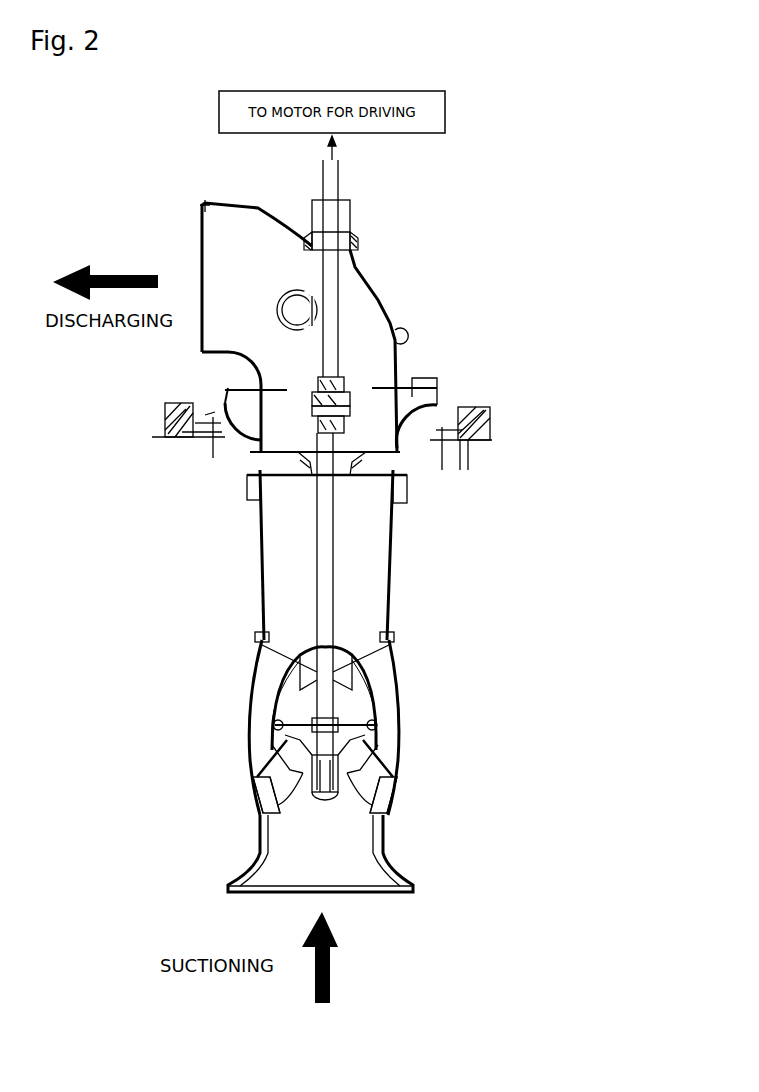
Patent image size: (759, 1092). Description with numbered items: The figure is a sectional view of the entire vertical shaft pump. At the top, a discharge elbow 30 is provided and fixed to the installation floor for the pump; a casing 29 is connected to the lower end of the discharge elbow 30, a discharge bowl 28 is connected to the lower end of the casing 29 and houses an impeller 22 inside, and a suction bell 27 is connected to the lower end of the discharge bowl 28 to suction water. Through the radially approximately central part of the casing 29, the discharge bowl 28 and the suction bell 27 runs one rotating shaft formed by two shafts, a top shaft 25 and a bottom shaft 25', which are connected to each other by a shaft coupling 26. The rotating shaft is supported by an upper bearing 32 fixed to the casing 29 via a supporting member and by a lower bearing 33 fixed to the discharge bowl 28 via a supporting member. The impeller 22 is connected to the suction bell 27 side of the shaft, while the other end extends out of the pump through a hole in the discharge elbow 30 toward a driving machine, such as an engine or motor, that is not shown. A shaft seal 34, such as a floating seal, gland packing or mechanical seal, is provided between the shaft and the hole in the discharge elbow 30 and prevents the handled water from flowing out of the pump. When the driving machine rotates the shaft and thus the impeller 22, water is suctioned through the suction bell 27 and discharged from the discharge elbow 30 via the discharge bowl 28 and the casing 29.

The impeller 22 is at (362, 773).
The drive shaft (upper) 25 is at (367, 268).
The drive shaft (lower) 25' is at (383, 611).
The shaft coupling 26 is at (345, 395).
The suction bell 27 is at (382, 845).
The discharge bowl 28 is at (397, 692).
The casing 29 is at (388, 588).
The discharge elbow 30 is at (383, 303).
The upper bearing 32 is at (303, 460).
The lower bearing 33 is at (317, 720).
The shaft seal 34 is at (350, 228).